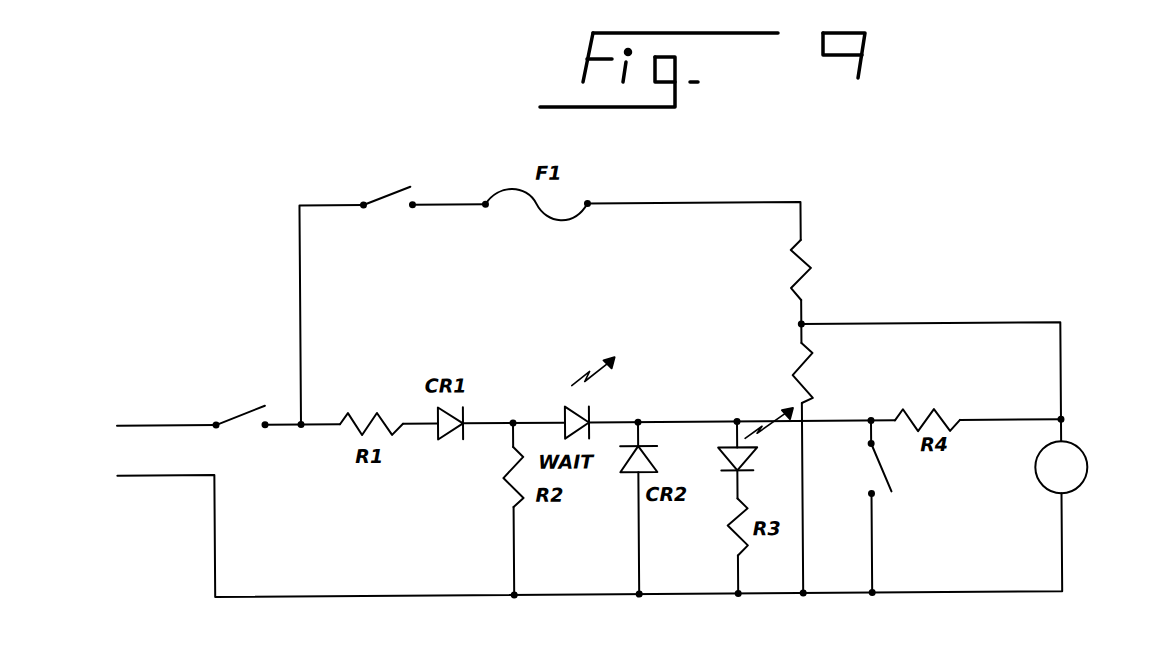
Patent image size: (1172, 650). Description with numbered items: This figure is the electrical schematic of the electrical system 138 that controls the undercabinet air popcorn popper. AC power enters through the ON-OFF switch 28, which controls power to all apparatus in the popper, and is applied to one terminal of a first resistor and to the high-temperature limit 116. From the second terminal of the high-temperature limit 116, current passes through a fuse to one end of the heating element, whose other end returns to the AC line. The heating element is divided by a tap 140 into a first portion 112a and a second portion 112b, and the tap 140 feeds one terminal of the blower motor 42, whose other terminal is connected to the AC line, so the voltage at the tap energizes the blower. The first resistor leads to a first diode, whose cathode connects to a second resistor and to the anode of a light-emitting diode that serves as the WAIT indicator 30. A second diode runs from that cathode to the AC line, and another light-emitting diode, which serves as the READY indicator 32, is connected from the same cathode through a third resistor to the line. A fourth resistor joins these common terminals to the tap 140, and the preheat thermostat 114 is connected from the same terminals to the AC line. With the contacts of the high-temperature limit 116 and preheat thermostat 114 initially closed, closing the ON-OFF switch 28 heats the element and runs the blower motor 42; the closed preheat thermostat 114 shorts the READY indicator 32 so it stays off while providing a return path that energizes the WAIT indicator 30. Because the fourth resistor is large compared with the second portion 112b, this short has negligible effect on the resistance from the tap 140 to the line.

The ON-OFF switch 28 is at (237, 415).
The WAIT indicator lamp 30 is at (565, 402).
The READY indicator lamp 32 is at (732, 447).
The blower motor 42 is at (1088, 471).
The first portion of heating element 112a is at (811, 271).
The second portion of heating element 112b is at (808, 385).
The preheat thermostat 114 is at (875, 484).
The high-temperature limit 116 is at (395, 212).
The electrical system 138 is at (853, 296).
The tap 140 is at (801, 326).